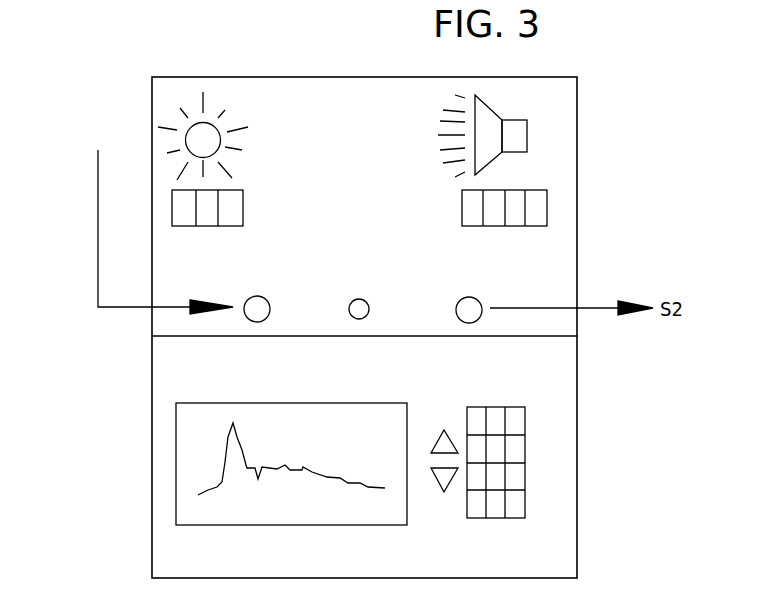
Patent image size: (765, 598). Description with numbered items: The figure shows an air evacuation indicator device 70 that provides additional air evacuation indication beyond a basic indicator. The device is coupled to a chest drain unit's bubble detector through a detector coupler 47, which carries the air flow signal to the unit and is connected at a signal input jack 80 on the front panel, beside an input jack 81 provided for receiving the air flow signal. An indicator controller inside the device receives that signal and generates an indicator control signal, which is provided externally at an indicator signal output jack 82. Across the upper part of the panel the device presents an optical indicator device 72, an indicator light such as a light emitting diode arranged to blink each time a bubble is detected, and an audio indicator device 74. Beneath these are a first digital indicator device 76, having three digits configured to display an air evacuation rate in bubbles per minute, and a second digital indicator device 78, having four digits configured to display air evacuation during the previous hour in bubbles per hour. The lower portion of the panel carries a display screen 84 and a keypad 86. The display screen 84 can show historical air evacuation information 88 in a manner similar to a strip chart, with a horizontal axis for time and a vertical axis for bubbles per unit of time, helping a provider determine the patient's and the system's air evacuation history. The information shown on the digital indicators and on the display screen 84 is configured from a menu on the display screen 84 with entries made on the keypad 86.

The detector coupler 47 is at (98, 232).
The air evacuation indicator device 70 is at (125, 323).
The optical indicator device 72 is at (232, 120).
The audio indicator device 74 is at (522, 152).
The first digital indicator device 76 is at (172, 211).
The second digital indicator device 78 is at (547, 208).
The signal input jack 80 is at (249, 321).
The input jack 81 is at (369, 309).
The indicator signal output jack 82 is at (486, 318).
The display screen 84 is at (174, 458).
The keypad 86 is at (525, 461).
The historical air evacuation information 88 is at (230, 453).